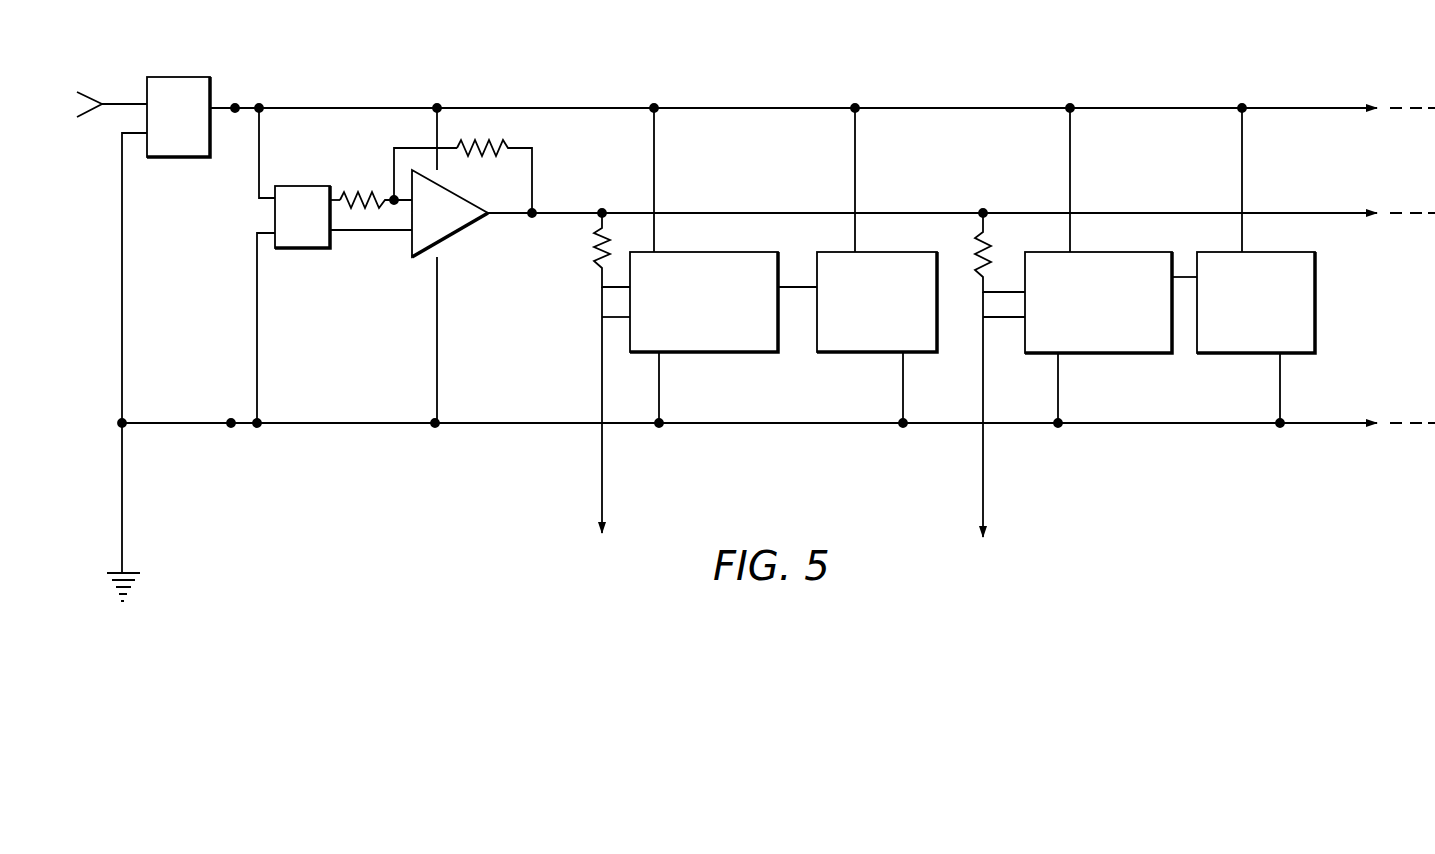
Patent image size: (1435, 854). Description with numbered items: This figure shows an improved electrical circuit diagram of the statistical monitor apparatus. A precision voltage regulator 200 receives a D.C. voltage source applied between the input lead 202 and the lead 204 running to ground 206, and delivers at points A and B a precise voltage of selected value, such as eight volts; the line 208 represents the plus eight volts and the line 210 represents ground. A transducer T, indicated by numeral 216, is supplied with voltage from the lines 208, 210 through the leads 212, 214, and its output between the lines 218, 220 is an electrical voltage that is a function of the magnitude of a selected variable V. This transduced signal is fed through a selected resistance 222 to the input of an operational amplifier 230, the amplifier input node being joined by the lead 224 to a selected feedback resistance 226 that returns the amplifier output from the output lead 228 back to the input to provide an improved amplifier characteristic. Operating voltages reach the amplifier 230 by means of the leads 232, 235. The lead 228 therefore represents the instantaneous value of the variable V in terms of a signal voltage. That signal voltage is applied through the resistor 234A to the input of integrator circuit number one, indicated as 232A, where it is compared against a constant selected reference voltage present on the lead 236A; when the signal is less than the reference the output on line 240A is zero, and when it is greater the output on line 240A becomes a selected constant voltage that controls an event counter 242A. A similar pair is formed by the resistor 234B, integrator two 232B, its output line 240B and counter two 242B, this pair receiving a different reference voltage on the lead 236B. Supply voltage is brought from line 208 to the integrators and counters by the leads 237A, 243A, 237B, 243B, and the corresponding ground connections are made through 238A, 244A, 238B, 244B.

The precision voltage regulator 200 is at (183, 77).
The input lead 202 is at (123, 108).
The lead 204 is at (122, 275).
The ground 206 is at (122, 518).
The line 208 is at (320, 108).
The line 210 is at (298, 423).
The lead 212 is at (258, 170).
The lead 214 is at (260, 350).
The transducer 216 is at (312, 250).
The line 218 is at (337, 187).
The line 220 is at (355, 232).
The resistance 222 is at (362, 195).
The lead 224 is at (415, 148).
The resistance 226 is at (488, 145).
The output lead 228 is at (563, 210).
The operational amplifier 230 is at (458, 233).
The lead 232 is at (440, 130).
The lead 235 is at (437, 390).
The resistor 234A is at (598, 250).
The lead 236A is at (602, 467).
The integrator circuit 232A is at (698, 250).
The lead 237A is at (658, 162).
The voltage connection to ground 238A is at (660, 398).
The line 240A is at (795, 283).
The event counter 242A is at (882, 252).
The lead 243A is at (857, 155).
The voltage connection to ground 244A is at (903, 397).
The resistor 234B is at (992, 255).
The lead 236B is at (985, 470).
The integrator circuit 232B is at (1075, 252).
The lead 237B is at (1070, 162).
The voltage connection to ground 238B is at (1060, 397).
The line 240B is at (1182, 273).
The event counter 242B is at (1313, 253).
The lead 243B is at (1242, 165).
The voltage connection to ground 244B is at (1280, 397).